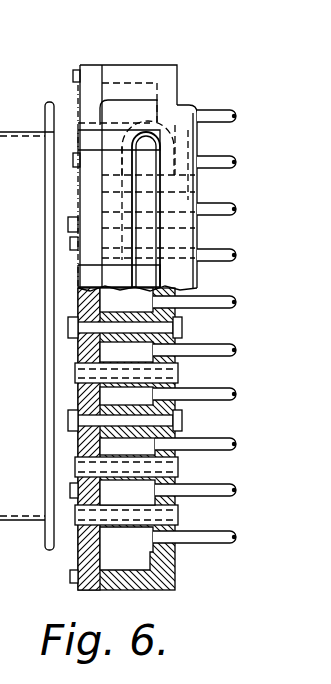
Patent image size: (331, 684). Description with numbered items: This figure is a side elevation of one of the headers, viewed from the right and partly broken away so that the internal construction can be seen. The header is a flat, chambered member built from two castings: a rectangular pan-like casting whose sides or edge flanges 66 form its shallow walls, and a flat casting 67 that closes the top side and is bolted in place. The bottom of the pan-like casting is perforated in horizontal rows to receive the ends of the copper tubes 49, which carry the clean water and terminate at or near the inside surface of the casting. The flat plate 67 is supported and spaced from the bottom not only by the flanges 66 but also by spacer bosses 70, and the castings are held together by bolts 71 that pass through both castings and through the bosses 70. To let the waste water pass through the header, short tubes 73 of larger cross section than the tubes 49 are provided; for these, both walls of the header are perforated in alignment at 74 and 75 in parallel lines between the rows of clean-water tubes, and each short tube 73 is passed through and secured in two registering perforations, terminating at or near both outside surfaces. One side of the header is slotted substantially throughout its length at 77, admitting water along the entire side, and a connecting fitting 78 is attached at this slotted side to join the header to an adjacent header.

The tubes 49 is at (210, 538).
The sides or edge flanges 66 is at (114, 588).
The flat casting 67 is at (88, 65).
The spacer bosses 70 is at (113, 405).
The bolts 71 is at (112, 310).
The short tubes 73 is at (115, 525).
The perforation 74 is at (102, 447).
The perforation 75 is at (127, 447).
The slot 77 is at (33, 133).
The fitting 78 is at (7, 148).